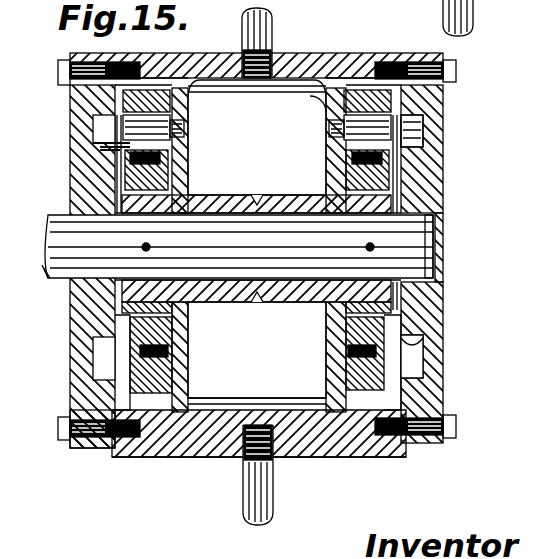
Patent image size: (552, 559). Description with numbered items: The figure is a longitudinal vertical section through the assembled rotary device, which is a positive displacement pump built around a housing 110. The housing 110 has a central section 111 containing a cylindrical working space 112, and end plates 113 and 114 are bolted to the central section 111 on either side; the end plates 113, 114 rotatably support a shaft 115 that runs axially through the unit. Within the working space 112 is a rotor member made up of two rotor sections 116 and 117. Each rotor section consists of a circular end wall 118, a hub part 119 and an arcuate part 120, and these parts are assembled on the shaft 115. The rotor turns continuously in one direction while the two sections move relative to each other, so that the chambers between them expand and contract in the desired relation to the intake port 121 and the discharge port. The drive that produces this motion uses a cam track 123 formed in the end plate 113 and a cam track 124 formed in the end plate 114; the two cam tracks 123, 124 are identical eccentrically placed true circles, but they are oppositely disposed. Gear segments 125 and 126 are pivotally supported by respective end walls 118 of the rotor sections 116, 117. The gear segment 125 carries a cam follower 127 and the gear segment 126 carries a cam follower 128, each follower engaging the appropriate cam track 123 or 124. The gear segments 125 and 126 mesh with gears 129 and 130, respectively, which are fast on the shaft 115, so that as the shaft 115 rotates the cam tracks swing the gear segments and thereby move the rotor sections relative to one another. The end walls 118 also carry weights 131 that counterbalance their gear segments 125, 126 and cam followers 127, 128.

The housing 110 is at (168, 458).
The central section 111 is at (216, 440).
The cylindrical working space 112 is at (400, 200).
The end plate 113 is at (70, 332).
The end plate 114 is at (440, 352).
The shaft 115 is at (82, 256).
The rotor section 116 is at (197, 116).
The rotor section 117 is at (316, 380).
The circular end wall 118 is at (326, 88).
The hub part 119 is at (232, 196).
The arcuate part 120 is at (276, 90).
The intake port 121 is at (476, 20).
The cam track 123 is at (108, 340).
The cam track 124 is at (412, 340).
The gear segment 125 is at (150, 98).
The gear segment 126 is at (380, 100).
The cam follower 127 is at (95, 147).
The cam follower 128 is at (410, 130).
The gear 129 is at (108, 200).
The gear 130 is at (382, 300).
The weight 131 is at (152, 380).